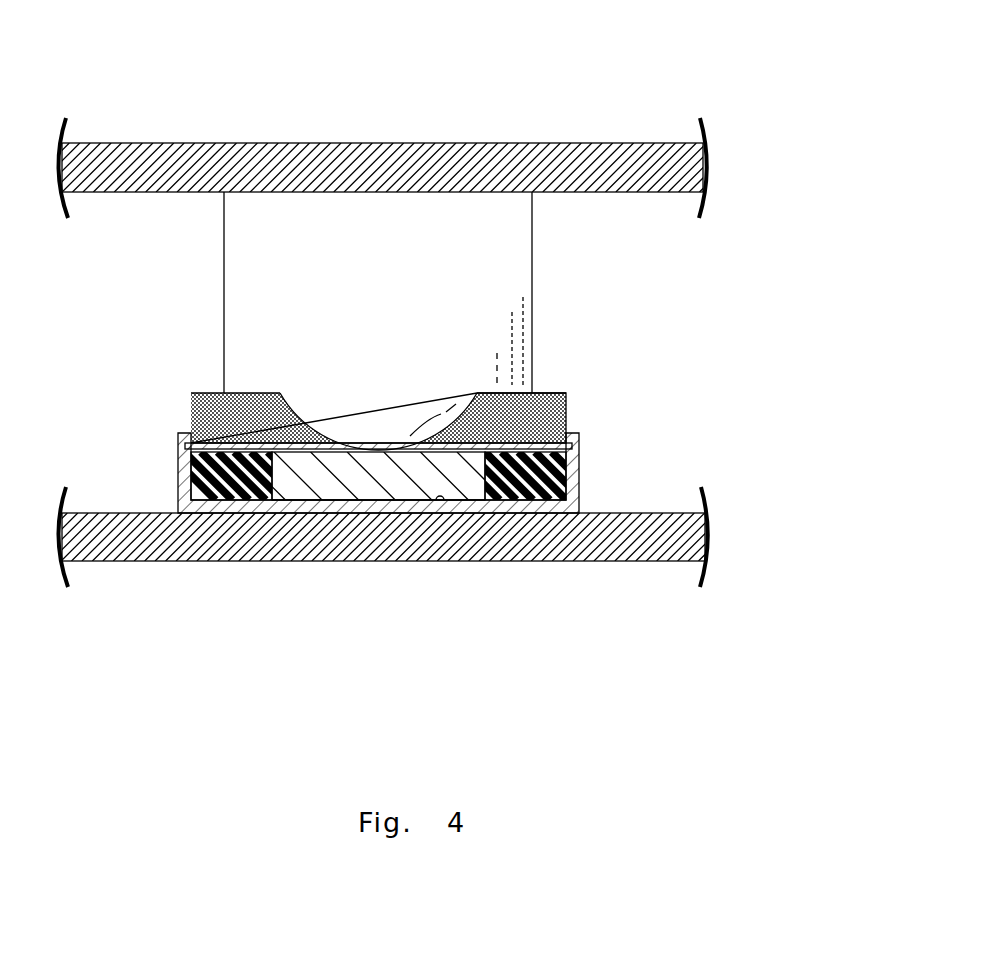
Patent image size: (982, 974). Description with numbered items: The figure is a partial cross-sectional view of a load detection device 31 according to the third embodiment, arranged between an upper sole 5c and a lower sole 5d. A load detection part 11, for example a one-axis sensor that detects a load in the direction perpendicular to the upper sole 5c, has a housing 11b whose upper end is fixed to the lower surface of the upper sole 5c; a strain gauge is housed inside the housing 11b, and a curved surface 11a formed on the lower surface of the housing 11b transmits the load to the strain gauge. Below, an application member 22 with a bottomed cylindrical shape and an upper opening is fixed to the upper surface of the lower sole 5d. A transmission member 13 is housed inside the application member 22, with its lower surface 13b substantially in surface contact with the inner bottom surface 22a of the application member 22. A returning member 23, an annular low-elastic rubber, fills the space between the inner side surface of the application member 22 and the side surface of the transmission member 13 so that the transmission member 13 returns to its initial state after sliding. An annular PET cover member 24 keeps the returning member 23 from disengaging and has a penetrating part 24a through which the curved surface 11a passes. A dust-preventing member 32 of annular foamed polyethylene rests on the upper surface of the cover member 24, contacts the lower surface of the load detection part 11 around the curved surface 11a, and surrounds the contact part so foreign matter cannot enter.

The upper sole 5c is at (618, 152).
The lower sole 5d is at (644, 555).
The load detection part 11 is at (380, 292).
The curved surface 11a is at (290, 407).
The housing 11b is at (525, 270).
The load detection device 31 is at (208, 287).
The dust-preventing member 32 is at (540, 393).
The cover member 24 is at (387, 396).
The penetrating part 24a is at (281, 423).
The returning member 23 is at (203, 475).
The application member 22 is at (428, 557).
The inner bottom surface 22a is at (440, 500).
The transmission member 13 is at (371, 569).
The lower surface 13b is at (317, 501).